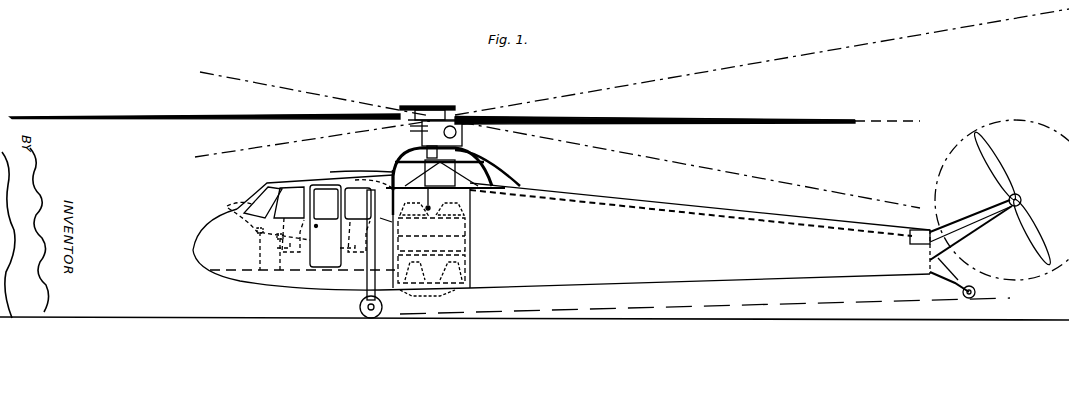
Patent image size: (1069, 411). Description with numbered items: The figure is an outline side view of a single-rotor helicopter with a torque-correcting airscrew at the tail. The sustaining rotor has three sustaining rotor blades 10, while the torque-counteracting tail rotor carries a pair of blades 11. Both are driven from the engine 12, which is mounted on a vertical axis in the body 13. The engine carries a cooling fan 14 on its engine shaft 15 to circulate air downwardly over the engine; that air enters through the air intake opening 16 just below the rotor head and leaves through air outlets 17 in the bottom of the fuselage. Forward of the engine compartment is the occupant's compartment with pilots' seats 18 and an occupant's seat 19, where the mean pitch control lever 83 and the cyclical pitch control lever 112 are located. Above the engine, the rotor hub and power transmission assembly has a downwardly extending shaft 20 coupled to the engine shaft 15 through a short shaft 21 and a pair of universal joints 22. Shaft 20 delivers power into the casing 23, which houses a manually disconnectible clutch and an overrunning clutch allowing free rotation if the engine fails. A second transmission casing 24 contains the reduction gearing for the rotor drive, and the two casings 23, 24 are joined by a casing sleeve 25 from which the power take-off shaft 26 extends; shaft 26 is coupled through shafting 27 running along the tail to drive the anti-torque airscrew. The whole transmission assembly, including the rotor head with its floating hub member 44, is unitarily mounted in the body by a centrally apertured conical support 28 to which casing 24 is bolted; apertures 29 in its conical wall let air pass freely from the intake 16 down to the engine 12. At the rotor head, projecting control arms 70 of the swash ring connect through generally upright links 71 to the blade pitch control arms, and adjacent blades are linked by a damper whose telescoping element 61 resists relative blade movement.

The sustaining rotor blades 10 is at (130, 116).
The tail rotor blades 11 is at (996, 162).
The engine 12 is at (470, 248).
The body 13 is at (612, 281).
The cooling fan 14 is at (466, 238).
The engine shaft 15 is at (386, 225).
The air intake opening 16 is at (463, 140).
The air outlets 17 is at (455, 290).
The pilots' seats 18 is at (284, 270).
The occupant's seat 19 is at (340, 250).
The downwardly extending shaft 20 is at (462, 196).
The short shaft 21 is at (426, 206).
The universal joints 22 is at (462, 212).
The casing 23 is at (398, 196).
The second transmission casing 24 is at (470, 165).
The casing sleeve 25 is at (408, 163).
The power take-off shaft 26 is at (488, 170).
The shafting 27 is at (612, 196).
The conical support 28 is at (380, 165).
The apertures 29 is at (384, 162).
The floating hub member 44 is at (446, 111).
The telescoping element 61 is at (437, 106).
The control arms 70 is at (500, 123).
The upright link 71 is at (416, 129).
The mean pitch control lever 83 is at (256, 232).
The cyclical pitch control lever 112 is at (228, 208).